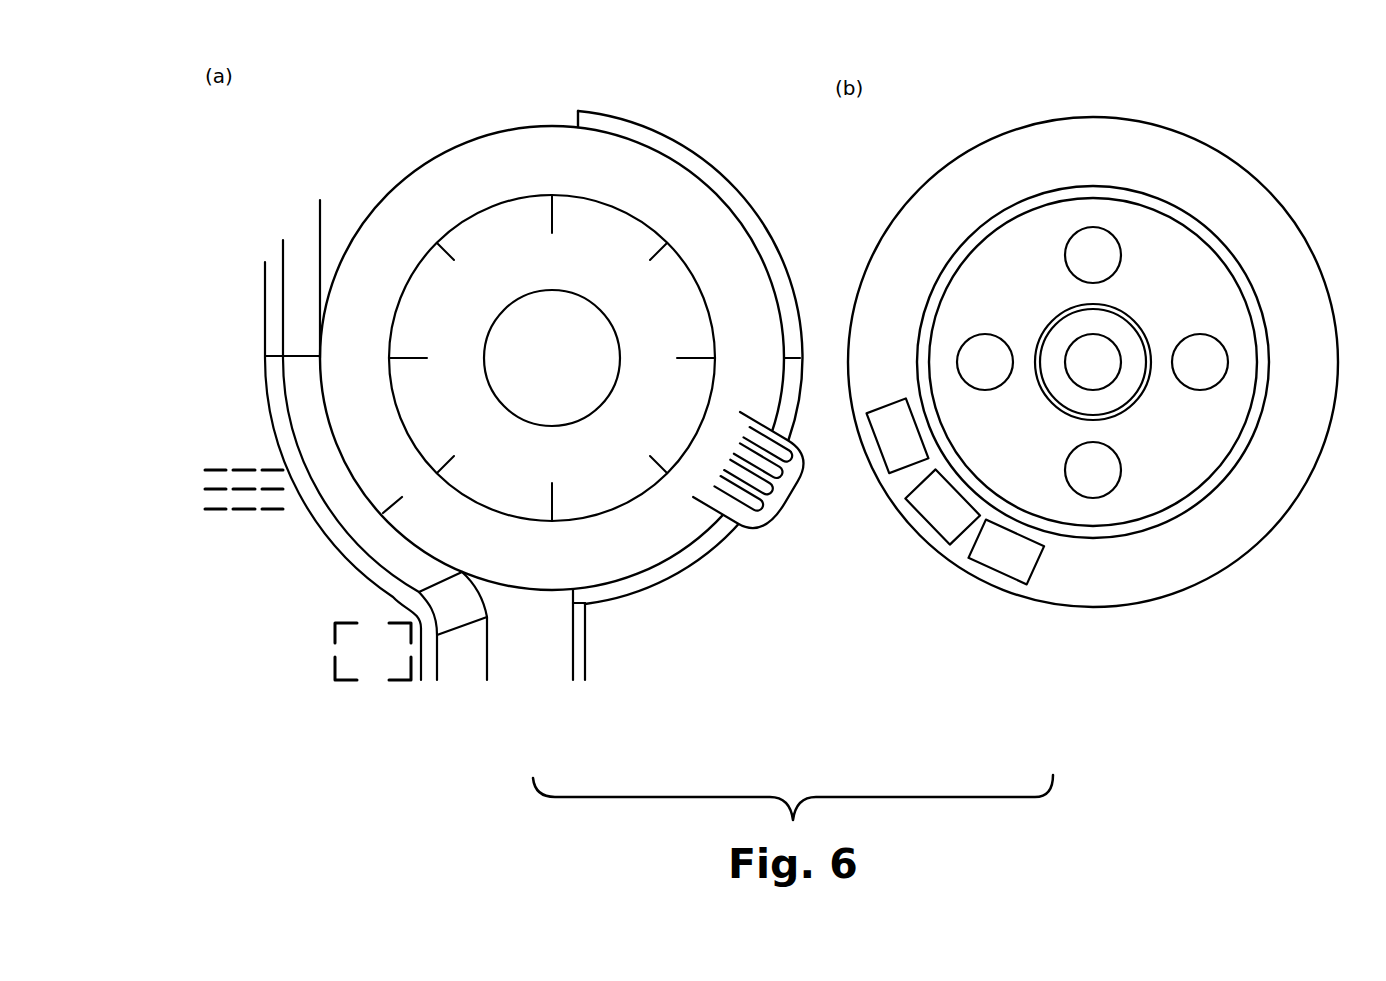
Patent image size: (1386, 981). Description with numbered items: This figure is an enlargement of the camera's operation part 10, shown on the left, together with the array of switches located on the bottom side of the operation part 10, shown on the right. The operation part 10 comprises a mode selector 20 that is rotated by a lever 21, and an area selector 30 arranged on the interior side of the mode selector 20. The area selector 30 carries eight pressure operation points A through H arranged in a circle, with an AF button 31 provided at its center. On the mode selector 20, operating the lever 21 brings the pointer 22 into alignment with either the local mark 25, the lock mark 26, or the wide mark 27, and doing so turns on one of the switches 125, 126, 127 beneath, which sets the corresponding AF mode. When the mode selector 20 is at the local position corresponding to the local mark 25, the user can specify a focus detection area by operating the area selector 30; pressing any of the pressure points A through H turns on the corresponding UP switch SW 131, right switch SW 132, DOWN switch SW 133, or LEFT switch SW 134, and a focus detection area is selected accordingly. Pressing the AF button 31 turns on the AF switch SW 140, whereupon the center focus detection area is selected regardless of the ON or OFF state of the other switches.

The operation part 10 is at (690, 125).
The mode selector 20 is at (478, 150).
The lever 21 is at (800, 488).
The pointer 22 is at (390, 512).
The local mark 25 is at (232, 468).
The lock mark 26 is at (233, 596).
The wide mark 27 is at (333, 683).
The area selector 30 is at (605, 246).
The AF button 31 is at (585, 383).
The switch 125 is at (882, 450).
The switch 126 is at (935, 522).
The switch 127 is at (1003, 572).
The UP switch SW 131 is at (1100, 232).
The right switch SW 132 is at (1208, 386).
The DOWN switch SW 133 is at (1098, 494).
The LEFT switch SW 134 is at (978, 334).
The AF switch SW 140 is at (1095, 342).